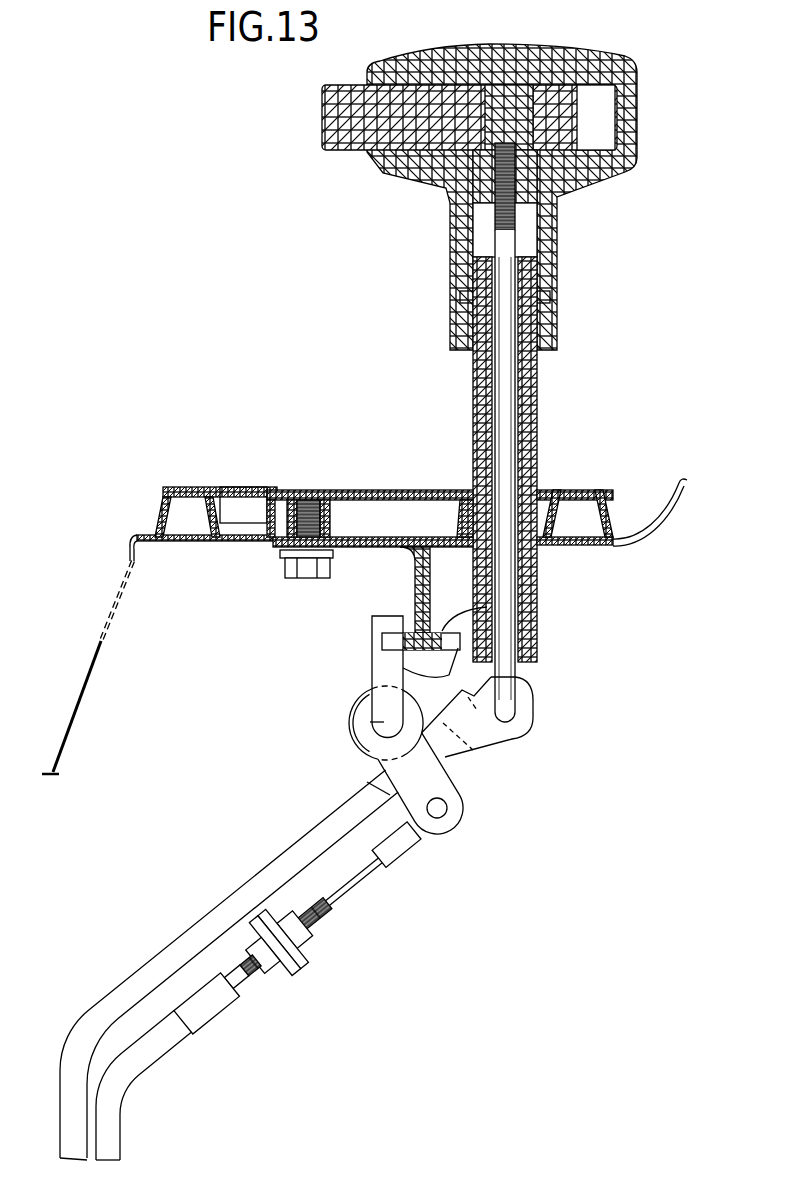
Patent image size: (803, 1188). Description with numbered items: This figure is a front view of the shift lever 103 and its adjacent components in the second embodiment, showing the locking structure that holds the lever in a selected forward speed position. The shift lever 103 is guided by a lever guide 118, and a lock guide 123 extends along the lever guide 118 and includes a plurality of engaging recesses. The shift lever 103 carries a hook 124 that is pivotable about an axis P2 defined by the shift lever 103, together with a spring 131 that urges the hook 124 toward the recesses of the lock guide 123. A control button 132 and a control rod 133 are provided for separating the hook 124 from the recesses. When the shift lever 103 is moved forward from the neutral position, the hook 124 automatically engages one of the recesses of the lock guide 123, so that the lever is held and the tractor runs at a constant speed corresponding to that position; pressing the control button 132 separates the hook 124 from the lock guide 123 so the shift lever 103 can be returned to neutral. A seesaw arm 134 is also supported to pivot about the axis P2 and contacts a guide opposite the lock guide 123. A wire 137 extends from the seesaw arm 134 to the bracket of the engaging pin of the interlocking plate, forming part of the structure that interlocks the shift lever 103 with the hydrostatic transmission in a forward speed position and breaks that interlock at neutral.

The control button 132 is at (322, 152).
The control rod 133 is at (507, 447).
The lever guide 118 is at (461, 479).
The lock guide 123 is at (440, 630).
The seesaw arm 134 is at (372, 655).
The axis P2 is at (370, 722).
The hook 124 is at (534, 697).
The spring 131 is at (447, 731).
The shift lever 103 is at (188, 930).
The wire 137 is at (169, 1052).